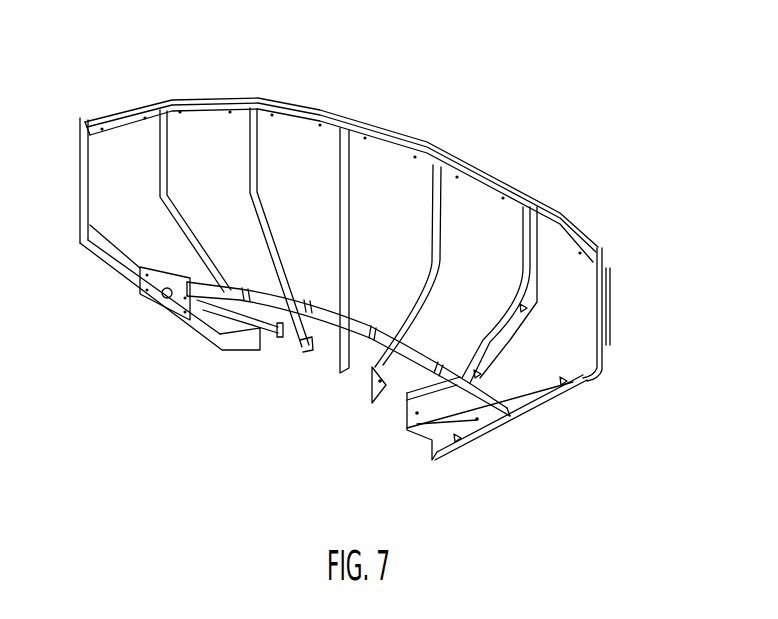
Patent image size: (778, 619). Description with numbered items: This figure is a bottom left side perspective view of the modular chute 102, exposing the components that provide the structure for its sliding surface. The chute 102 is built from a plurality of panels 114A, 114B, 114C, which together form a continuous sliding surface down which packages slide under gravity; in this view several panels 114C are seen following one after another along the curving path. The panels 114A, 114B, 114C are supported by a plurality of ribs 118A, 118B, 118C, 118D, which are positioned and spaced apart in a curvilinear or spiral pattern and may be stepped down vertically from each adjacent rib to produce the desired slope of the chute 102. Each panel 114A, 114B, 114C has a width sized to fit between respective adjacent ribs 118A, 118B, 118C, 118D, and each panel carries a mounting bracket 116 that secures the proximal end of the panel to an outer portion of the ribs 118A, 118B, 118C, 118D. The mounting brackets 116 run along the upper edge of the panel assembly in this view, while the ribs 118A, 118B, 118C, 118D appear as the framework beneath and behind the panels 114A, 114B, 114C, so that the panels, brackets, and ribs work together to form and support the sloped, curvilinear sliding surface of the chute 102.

The modular chute 102 is at (668, 181).
The mounting bracket 116 is at (142, 107).
The panel 114A is at (145, 199).
The panel 114B is at (225, 200).
The panel 114C is at (313, 200).
The rib 118A is at (123, 273).
The rib 118B is at (197, 257).
The rib 118C is at (415, 414).
The rib 118D is at (585, 379).